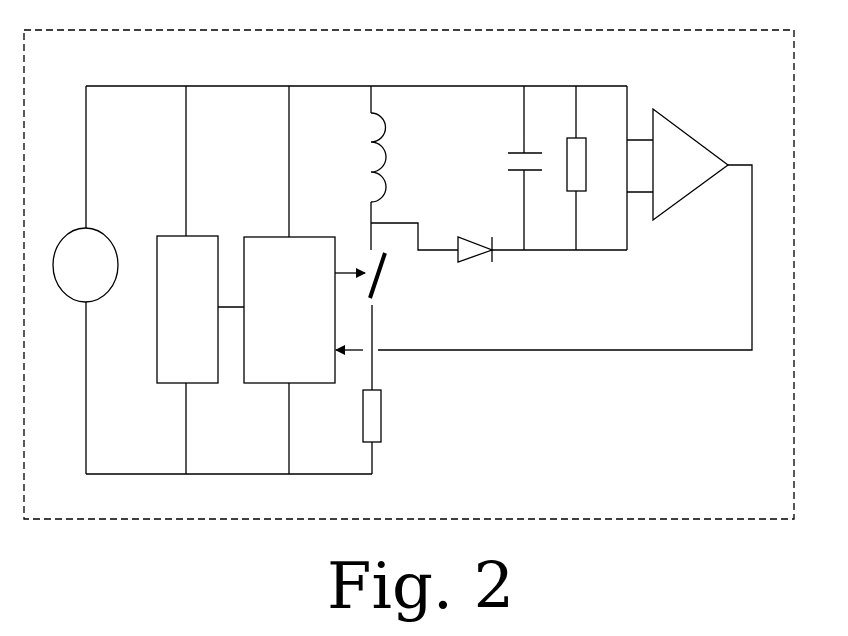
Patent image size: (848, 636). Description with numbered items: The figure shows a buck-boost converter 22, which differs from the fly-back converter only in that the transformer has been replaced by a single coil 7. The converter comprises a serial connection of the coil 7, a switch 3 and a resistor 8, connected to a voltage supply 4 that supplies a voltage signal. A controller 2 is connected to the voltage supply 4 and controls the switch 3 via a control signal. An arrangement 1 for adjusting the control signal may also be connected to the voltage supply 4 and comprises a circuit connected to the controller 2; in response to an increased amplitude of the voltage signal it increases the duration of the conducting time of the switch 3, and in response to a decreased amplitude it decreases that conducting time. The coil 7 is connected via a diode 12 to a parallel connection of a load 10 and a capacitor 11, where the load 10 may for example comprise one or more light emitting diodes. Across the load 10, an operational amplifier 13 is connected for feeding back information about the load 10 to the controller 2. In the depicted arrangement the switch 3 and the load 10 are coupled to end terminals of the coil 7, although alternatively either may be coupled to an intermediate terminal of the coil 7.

The arrangement 1 is at (186, 331).
The controller 2 is at (289, 332).
The switch 3 is at (388, 275).
The voltage supply 4 is at (85, 285).
The coil 7 is at (363, 157).
The resistor 8 is at (388, 416).
The load 10 is at (593, 183).
The capacitor 11 is at (514, 142).
The diode 12 is at (475, 272).
The operational amplifier 13 is at (690, 168).
The buck-boost converter 22 is at (767, 519).